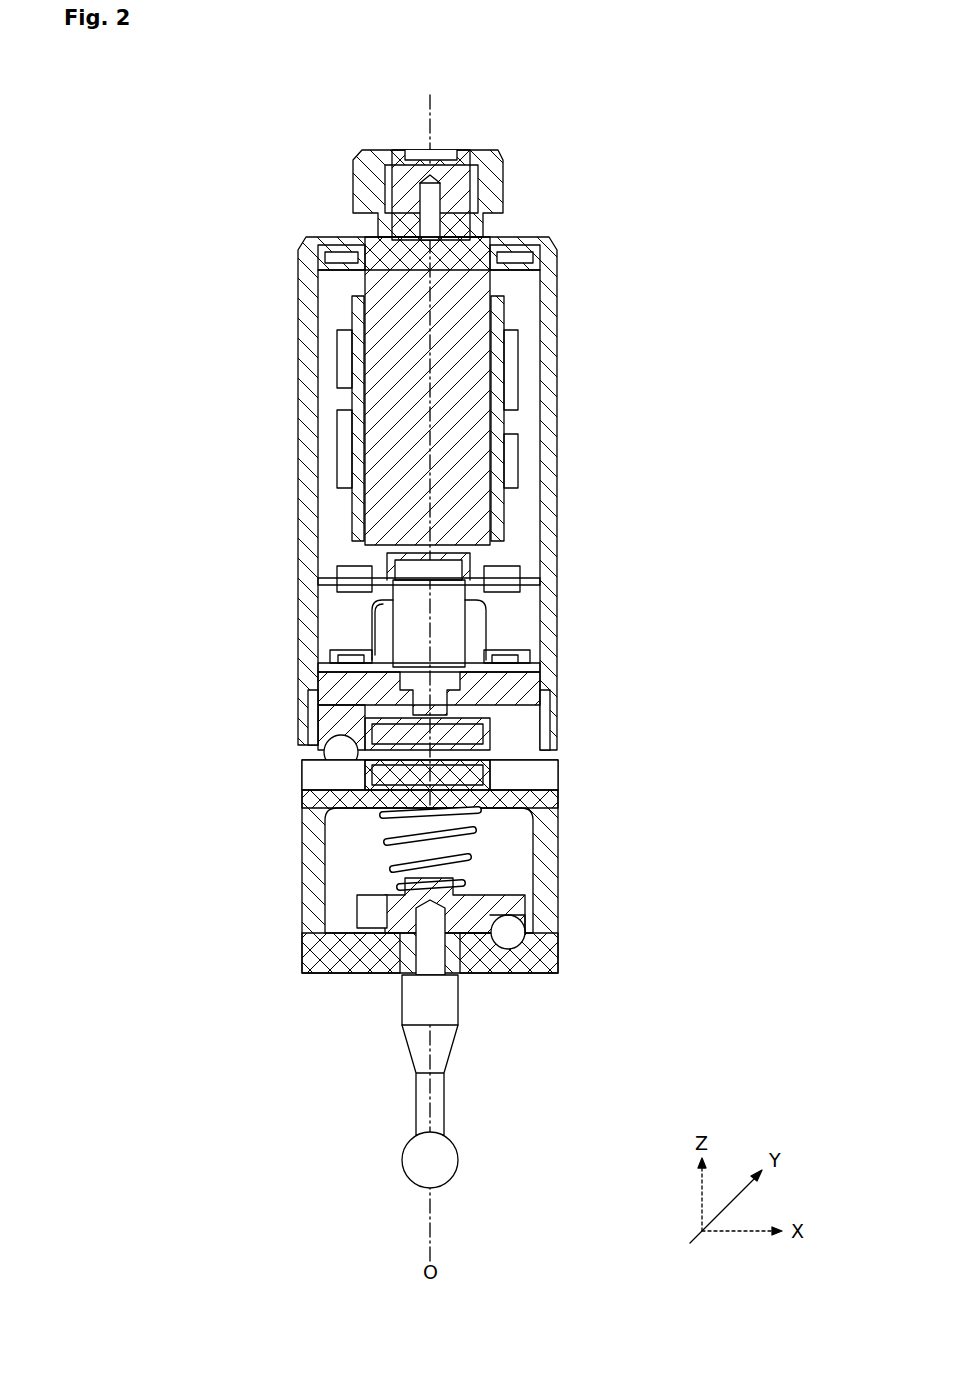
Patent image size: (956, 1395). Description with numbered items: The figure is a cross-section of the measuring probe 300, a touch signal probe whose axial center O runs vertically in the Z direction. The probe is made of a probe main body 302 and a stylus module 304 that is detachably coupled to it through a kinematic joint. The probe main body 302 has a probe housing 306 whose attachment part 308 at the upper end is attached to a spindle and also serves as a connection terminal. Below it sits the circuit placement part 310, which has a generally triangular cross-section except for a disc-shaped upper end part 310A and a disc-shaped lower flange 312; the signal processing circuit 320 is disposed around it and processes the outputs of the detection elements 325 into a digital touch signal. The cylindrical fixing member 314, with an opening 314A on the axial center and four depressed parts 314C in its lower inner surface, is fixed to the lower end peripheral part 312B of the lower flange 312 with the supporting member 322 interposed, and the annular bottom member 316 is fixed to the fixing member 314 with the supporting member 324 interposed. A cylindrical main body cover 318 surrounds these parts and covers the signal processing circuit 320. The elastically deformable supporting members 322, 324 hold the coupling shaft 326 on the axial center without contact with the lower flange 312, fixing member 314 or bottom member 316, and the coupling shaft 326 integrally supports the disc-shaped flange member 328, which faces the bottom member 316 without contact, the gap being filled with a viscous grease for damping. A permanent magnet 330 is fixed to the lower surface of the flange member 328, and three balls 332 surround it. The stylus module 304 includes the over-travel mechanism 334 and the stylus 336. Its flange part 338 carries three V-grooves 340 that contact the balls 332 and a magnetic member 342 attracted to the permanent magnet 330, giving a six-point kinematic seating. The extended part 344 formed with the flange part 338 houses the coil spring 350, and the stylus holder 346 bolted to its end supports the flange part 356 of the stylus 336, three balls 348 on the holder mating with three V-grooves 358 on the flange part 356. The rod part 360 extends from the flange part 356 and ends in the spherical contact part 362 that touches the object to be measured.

The measuring probe 300 is at (645, 152).
The probe main body 302 is at (631, 377).
The stylus module 304 is at (704, 982).
The probe housing 306 is at (607, 344).
The attachment part 308 is at (497, 170).
The circuit placement part 310 is at (484, 310).
The upper end part 310A is at (462, 318).
The lower flange 312 is at (490, 552).
The lower end peripheral part 312B is at (332, 575).
The fixing member 314 is at (527, 592).
The opening 314A is at (377, 608).
The depressed parts 314C is at (343, 655).
The bottom member 316 is at (527, 693).
The main body cover 318 is at (557, 397).
The signal processing circuit 320 is at (507, 333).
The supporting member 322 is at (522, 565).
The supporting member 324 is at (513, 657).
The detection elements 325 is at (338, 653).
The coupling shaft 326 is at (448, 612).
The flange member 328 is at (332, 722).
The permanent magnet 330 is at (493, 736).
The balls 332 is at (338, 753).
The over-travel mechanism 334 is at (584, 850).
The stylus 336 is at (516, 1072).
The flange part 338 is at (353, 792).
The V-grooves 340 is at (326, 772).
The magnetic member 342 is at (530, 768).
The extended part 344 is at (304, 831).
The stylus holder 346 is at (547, 962).
The balls 348 is at (508, 932).
The coil spring 350 is at (390, 863).
The flange part 356 is at (523, 903).
The V-grooves 358 is at (547, 910).
The rod part 360 is at (432, 1118).
The contact part 362 is at (440, 1165).